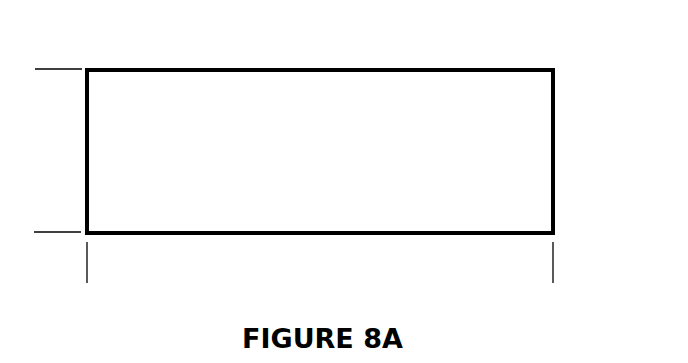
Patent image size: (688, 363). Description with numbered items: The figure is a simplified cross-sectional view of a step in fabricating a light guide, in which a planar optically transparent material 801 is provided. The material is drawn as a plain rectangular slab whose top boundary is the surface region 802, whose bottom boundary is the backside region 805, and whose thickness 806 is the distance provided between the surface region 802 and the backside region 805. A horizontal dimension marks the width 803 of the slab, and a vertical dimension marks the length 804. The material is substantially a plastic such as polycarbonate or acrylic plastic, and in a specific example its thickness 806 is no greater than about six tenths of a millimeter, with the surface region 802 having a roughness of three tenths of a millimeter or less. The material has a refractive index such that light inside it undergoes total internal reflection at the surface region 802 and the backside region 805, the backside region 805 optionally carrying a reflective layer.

The rectangular substrate/panel 801 is at (538, 132).
The surface region 802 is at (244, 69).
The width 803 is at (551, 272).
The length 804 is at (49, 71).
The backside region 805 is at (511, 237).
The thickness 806 is at (356, 140).